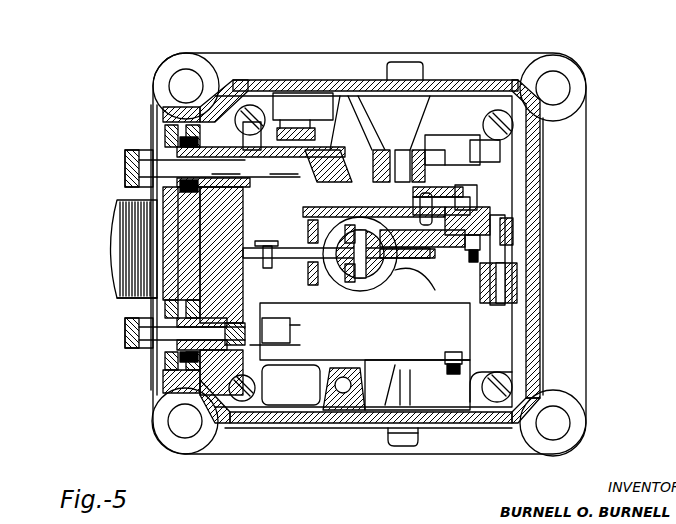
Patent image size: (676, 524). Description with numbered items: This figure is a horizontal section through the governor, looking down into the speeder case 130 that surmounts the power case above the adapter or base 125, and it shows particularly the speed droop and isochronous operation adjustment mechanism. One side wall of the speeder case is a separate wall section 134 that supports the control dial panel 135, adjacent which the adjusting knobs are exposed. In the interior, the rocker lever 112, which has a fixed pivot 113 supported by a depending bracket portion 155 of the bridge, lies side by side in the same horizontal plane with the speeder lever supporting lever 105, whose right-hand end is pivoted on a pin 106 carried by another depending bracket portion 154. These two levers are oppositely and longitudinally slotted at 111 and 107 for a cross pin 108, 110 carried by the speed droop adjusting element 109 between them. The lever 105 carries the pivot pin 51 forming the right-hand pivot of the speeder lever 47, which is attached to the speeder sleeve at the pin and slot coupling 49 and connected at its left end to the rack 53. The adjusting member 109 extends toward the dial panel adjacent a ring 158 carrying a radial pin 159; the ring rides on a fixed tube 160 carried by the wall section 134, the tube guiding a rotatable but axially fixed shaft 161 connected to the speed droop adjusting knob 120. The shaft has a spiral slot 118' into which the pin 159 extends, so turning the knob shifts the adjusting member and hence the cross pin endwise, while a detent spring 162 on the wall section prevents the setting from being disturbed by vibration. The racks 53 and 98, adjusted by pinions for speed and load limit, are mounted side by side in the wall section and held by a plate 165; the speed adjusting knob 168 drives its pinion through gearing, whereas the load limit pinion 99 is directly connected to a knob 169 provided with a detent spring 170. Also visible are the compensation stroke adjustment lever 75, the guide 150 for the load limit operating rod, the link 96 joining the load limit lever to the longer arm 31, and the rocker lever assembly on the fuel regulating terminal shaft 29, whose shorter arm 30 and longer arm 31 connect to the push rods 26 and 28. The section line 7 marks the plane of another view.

The section line 7— 7 is at (200, 85).
The push rod 26 is at (480, 175).
The push rod 28 is at (300, 332).
The fuel regulating terminal shaft 29 is at (405, 447).
The shorter arm 30 is at (497, 155).
The longer arm 31 is at (418, 352).
The speeder lever 47 is at (372, 280).
The pin and slot coupling 49 is at (340, 285).
The pivot pin 51 is at (440, 275).
The rack 53 is at (300, 290).
The compensation stroke adjustment lever 75 is at (293, 112).
The link 96 is at (462, 360).
The load limit rack 98 is at (276, 330).
The load limit adjusting pinion 99 is at (255, 346).
The speeder lever supporting lever 105 is at (520, 240).
The pivot pin 106 is at (503, 272).
The slot 107 is at (520, 212).
The cross pin 108 is at (425, 262).
The speed droop adjusting element 109 is at (368, 150).
The pin end 110 is at (469, 137).
The slot 111 is at (455, 200).
The rocker lever 112 is at (465, 185).
The fixed pivot 113 is at (400, 152).
The spiral slot 118' is at (361, 86).
The speed droop adjusting knob 120 is at (125, 165).
The adapter or base 125 is at (568, 380).
The speeder case 130 is at (238, 78).
The wall section 134 is at (197, 230).
The control dial panel 135 is at (112, 292).
The guide 150 is at (345, 400).
The depending bracket portion 154 is at (505, 300).
The depending bracket portion 155 is at (425, 160).
The ring 158 is at (305, 95).
The pin 159 is at (284, 166).
The fixed tube 160 is at (293, 305).
The shaft 161 is at (226, 166).
The detent spring 162 is at (165, 138).
The plate 165 is at (130, 303).
The speed adjusting knob 168 is at (116, 222).
The knob 169 is at (125, 345).
The detent spring 170 is at (157, 360).